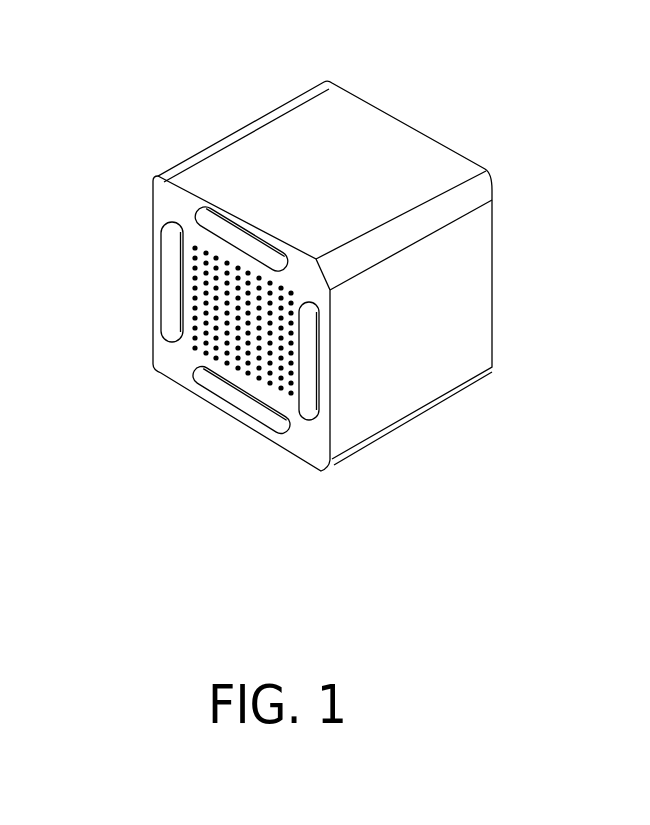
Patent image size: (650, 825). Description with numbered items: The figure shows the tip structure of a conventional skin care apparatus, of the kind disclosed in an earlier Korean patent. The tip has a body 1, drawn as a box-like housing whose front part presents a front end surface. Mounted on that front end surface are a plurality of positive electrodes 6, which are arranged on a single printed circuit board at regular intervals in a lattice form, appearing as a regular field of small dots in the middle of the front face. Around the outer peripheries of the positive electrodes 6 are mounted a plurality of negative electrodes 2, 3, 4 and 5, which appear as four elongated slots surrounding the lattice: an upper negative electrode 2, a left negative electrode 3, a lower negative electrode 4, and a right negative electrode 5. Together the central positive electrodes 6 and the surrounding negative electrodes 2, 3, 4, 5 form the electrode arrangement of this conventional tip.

The body 1 is at (322, 238).
The negative electrode 2 is at (247, 199).
The negative electrode 3 is at (117, 276).
The negative electrode 4 is at (235, 444).
The negative electrode 5 is at (363, 361).
The positive electrodes 6 is at (198, 380).